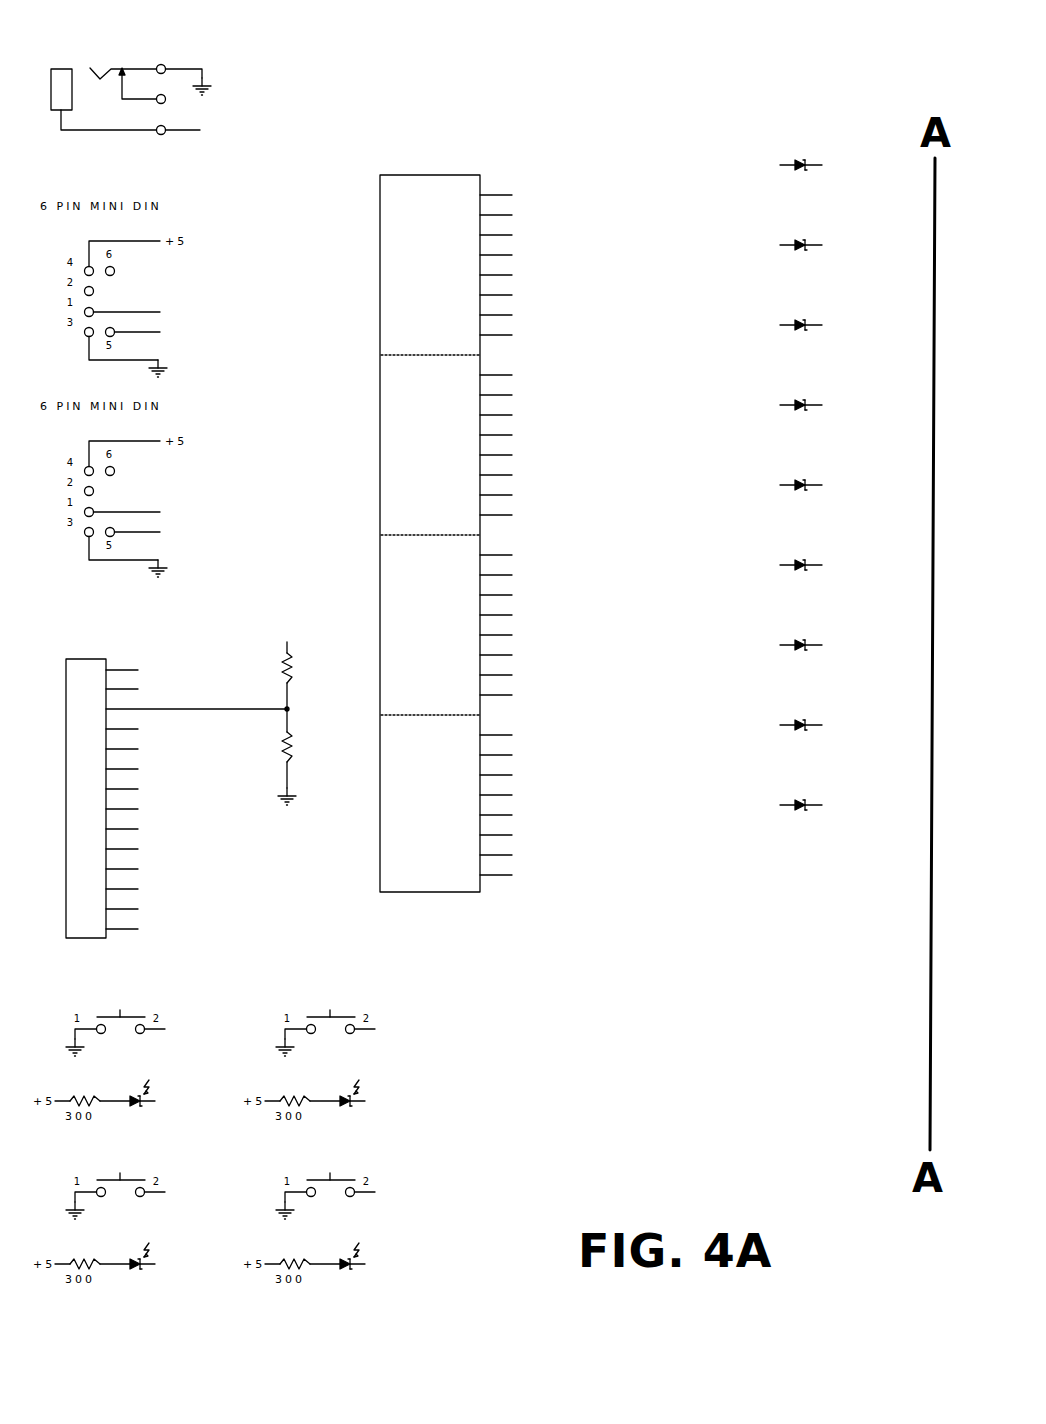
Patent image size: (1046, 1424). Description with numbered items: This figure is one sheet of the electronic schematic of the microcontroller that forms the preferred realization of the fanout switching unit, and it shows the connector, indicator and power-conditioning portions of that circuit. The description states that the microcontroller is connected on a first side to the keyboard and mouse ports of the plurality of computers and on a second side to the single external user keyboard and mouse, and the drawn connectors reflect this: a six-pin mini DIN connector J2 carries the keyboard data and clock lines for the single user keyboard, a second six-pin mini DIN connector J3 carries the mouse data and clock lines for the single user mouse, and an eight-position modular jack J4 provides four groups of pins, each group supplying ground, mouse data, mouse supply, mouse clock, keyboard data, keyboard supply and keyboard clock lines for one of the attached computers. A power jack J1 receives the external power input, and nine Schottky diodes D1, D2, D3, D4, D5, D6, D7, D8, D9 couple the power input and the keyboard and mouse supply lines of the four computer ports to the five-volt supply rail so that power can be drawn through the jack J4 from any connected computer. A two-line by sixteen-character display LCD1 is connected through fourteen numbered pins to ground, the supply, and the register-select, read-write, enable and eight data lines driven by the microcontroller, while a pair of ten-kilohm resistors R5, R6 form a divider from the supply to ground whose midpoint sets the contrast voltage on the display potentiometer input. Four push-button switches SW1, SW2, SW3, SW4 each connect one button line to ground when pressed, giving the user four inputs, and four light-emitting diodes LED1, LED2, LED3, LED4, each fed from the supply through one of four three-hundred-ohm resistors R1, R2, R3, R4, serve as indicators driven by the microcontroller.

The power jack PJ002A J1 is at (156, 73).
The 6 pin mini DIN keyboard connector J2 is at (128, 277).
The 6 pin mini DIN mouse connector J3 is at (126, 477).
The 8 port modular jack J4 is at (476, 511).
The 2x16 LCD display LCD1 is at (176, 774).
The 300 ohm resistor R1 is at (94, 1099).
The 300 ohm resistor R2 is at (304, 1099).
The 300 ohm resistor R3 is at (94, 1262).
The 300 ohm resistor R4 is at (304, 1262).
The 10K resistor R5 is at (300, 669).
The 10K resistor R6 is at (304, 757).
The push button switch SW1 is at (138, 1022).
The push button switch SW2 is at (348, 1022).
The push button switch SW3 is at (138, 1185).
The push button switch SW4 is at (348, 1185).
The light emitting diode LED1 is at (158, 1089).
The light emitting diode LED2 is at (368, 1089).
The light emitting diode LED3 is at (158, 1252).
The light emitting diode LED4 is at (368, 1252).
The Schottky diode MBR0520LT1 D1 is at (801, 166).
The Schottky diode MBR0520LT1 D2 is at (802, 246).
The Schottky diode MBR0520LT1 D3 is at (803, 326).
The Schottky diode MBR0520LT1 D4 is at (802, 406).
The Schottky diode MBR0520LT1 D5 is at (803, 486).
The Schottky diode MBR0520LT1 D6 is at (802, 566).
The Schottky diode MBR0520LT1 D7 is at (803, 646).
The Schottky diode MBR0520LT1 D8 is at (802, 726).
The Schottky diode MBR0520LT1 D9 is at (803, 806).